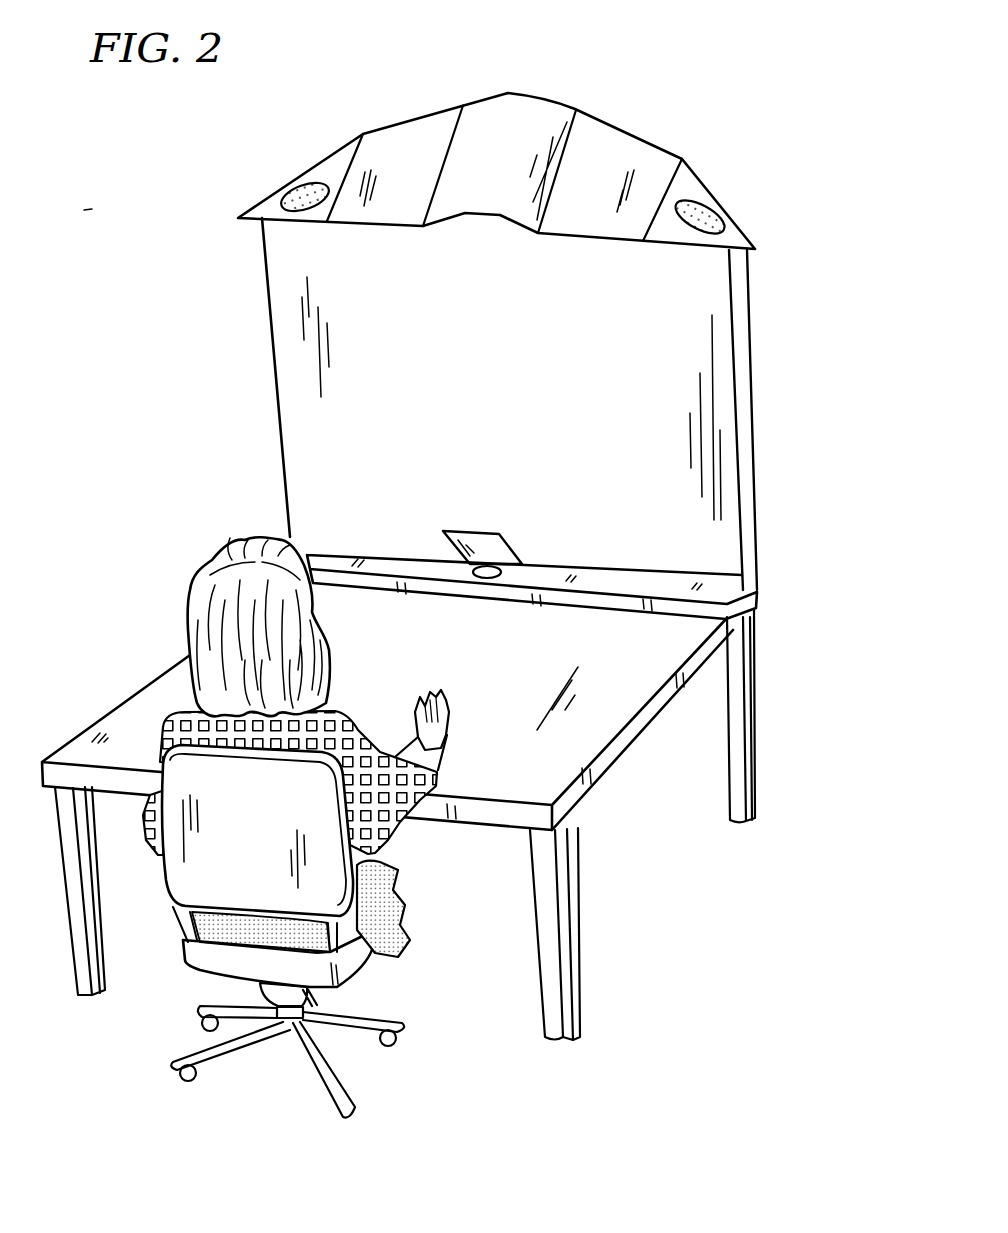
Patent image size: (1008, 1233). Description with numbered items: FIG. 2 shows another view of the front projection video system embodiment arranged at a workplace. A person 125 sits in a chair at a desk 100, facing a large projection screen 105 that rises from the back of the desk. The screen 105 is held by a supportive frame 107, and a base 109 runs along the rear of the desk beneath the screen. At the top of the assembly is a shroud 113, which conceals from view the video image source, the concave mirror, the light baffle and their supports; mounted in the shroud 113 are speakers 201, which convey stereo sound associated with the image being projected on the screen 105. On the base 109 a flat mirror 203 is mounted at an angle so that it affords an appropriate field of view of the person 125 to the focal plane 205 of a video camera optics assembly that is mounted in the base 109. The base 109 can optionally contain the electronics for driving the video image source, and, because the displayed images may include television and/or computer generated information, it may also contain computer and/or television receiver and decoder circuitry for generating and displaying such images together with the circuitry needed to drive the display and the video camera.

The desk 100 is at (623, 755).
The projection screen 105 is at (653, 347).
The supportive frame 107 is at (747, 432).
The base 109 is at (702, 607).
The shroud 113 is at (528, 93).
The person 125 is at (198, 578).
The speakers 201 is at (293, 190).
The flat mirror 203 is at (498, 532).
The focal plane 205 is at (480, 590).